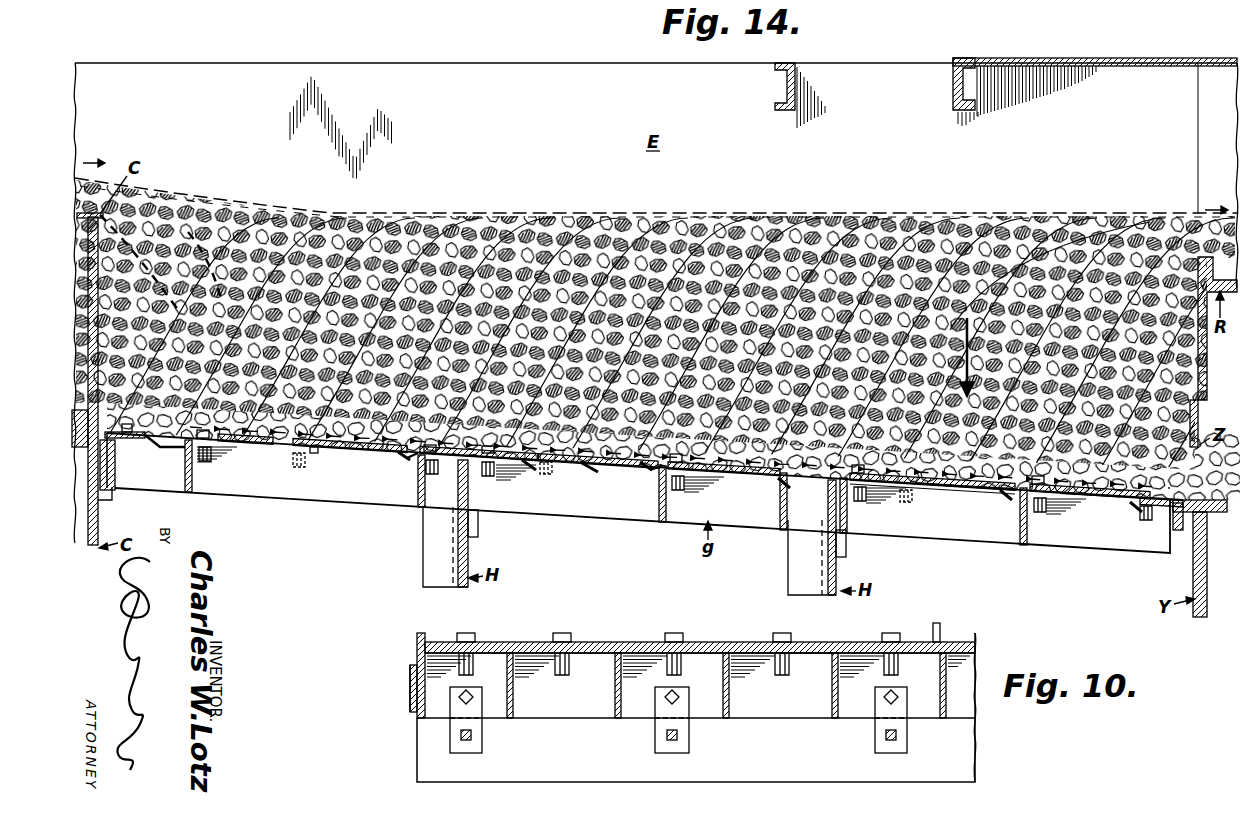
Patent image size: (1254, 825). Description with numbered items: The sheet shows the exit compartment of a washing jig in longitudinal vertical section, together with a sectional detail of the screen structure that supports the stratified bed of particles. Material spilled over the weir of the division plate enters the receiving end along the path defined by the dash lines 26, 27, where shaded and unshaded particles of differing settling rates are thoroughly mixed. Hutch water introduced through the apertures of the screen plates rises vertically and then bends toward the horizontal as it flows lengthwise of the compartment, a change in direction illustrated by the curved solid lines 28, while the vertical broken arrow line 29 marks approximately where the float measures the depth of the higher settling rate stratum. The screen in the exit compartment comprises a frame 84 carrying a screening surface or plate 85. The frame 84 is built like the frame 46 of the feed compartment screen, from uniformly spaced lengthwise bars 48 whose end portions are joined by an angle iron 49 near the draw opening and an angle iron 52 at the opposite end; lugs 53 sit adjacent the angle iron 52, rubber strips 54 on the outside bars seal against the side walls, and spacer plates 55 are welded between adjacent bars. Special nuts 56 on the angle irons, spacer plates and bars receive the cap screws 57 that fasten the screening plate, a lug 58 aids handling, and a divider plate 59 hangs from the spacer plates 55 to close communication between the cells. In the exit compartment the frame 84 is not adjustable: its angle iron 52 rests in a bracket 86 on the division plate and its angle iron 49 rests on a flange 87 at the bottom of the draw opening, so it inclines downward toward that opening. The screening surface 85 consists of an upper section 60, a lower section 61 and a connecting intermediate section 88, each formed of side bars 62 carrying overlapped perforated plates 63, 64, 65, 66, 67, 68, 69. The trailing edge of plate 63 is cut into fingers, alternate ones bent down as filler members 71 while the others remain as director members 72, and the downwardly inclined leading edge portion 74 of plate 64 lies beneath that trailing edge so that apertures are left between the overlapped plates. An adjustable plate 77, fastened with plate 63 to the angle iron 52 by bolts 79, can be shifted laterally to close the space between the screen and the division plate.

In FIG. 14, the dash line 26 is at (222, 206).
In FIG. 14, the dash line 27 is at (163, 190).
In FIG. 14, the curved solid lines 28 is at (575, 234).
In FIG. 14, the vertical broken arrow line 29 is at (950, 320).
In FIG. 10, the frame 46 is at (405, 690).
In FIG. 14, the bars 48 is at (690, 525).
In FIG. 10, the bars 48 is at (417, 715).
In FIG. 14, the angle iron 49 is at (1160, 510).
In FIG. 14, the angle iron 52 is at (130, 472).
In FIG. 10, the lugs 53 is at (598, 660).
In FIG. 10, the rubber strips 54 is at (410, 668).
In FIG. 14, the spacer plates 55 is at (190, 480).
In FIG. 10, the spacer plates 55 is at (978, 650).
In FIG. 14, the special nut 56 is at (298, 470).
In FIG. 10, the special nut 56 is at (560, 675).
In FIG. 14, the cap screws 57 is at (206, 446).
In FIG. 10, the cap screws 57 is at (472, 636).
In FIG. 10, the lug 58 is at (940, 628).
In FIG. 14, the divider plate 59 is at (478, 556).
In FIG. 10, the divider plate 59 is at (977, 760).
In FIG. 14, the upper section 60 is at (316, 462).
In FIG. 14, the lower section 61 is at (925, 490).
In FIG. 14, the side bars 62 is at (380, 470).
In FIG. 10, the side bars 62 is at (415, 640).
In FIG. 14, the perforated plate 63 is at (178, 470).
In FIG. 14, the perforated plate 64 is at (260, 448).
In FIG. 14, the perforated plate 65 is at (350, 455).
In FIG. 14, the perforated plate 66 is at (440, 462).
In FIG. 10, the perforated plate 66 is at (722, 645).
In FIG. 14, the perforated plate 67 is at (882, 492).
In FIG. 10, the perforated plate 67 is at (817, 660).
In FIG. 14, the perforated plate 68 is at (965, 492).
In FIG. 14, the perforated plate 69 is at (1085, 499).
In FIG. 14, the filler members 71 is at (412, 462).
In FIG. 14, the director members 72 is at (400, 457).
In FIG. 14, the leading edge portion 74 is at (527, 470).
In FIG. 14, the adjustable plate 77 is at (165, 450).
In FIG. 14, the bolts 79 is at (128, 445).
In FIG. 14, the frame 84 is at (615, 522).
In FIG. 14, the screening surface or plate 85 is at (992, 495).
In FIG. 14, the bracket 86 is at (112, 512).
In FIG. 14, the flange 87 is at (1180, 532).
In FIG. 14, the intermediate section 88 is at (594, 478).